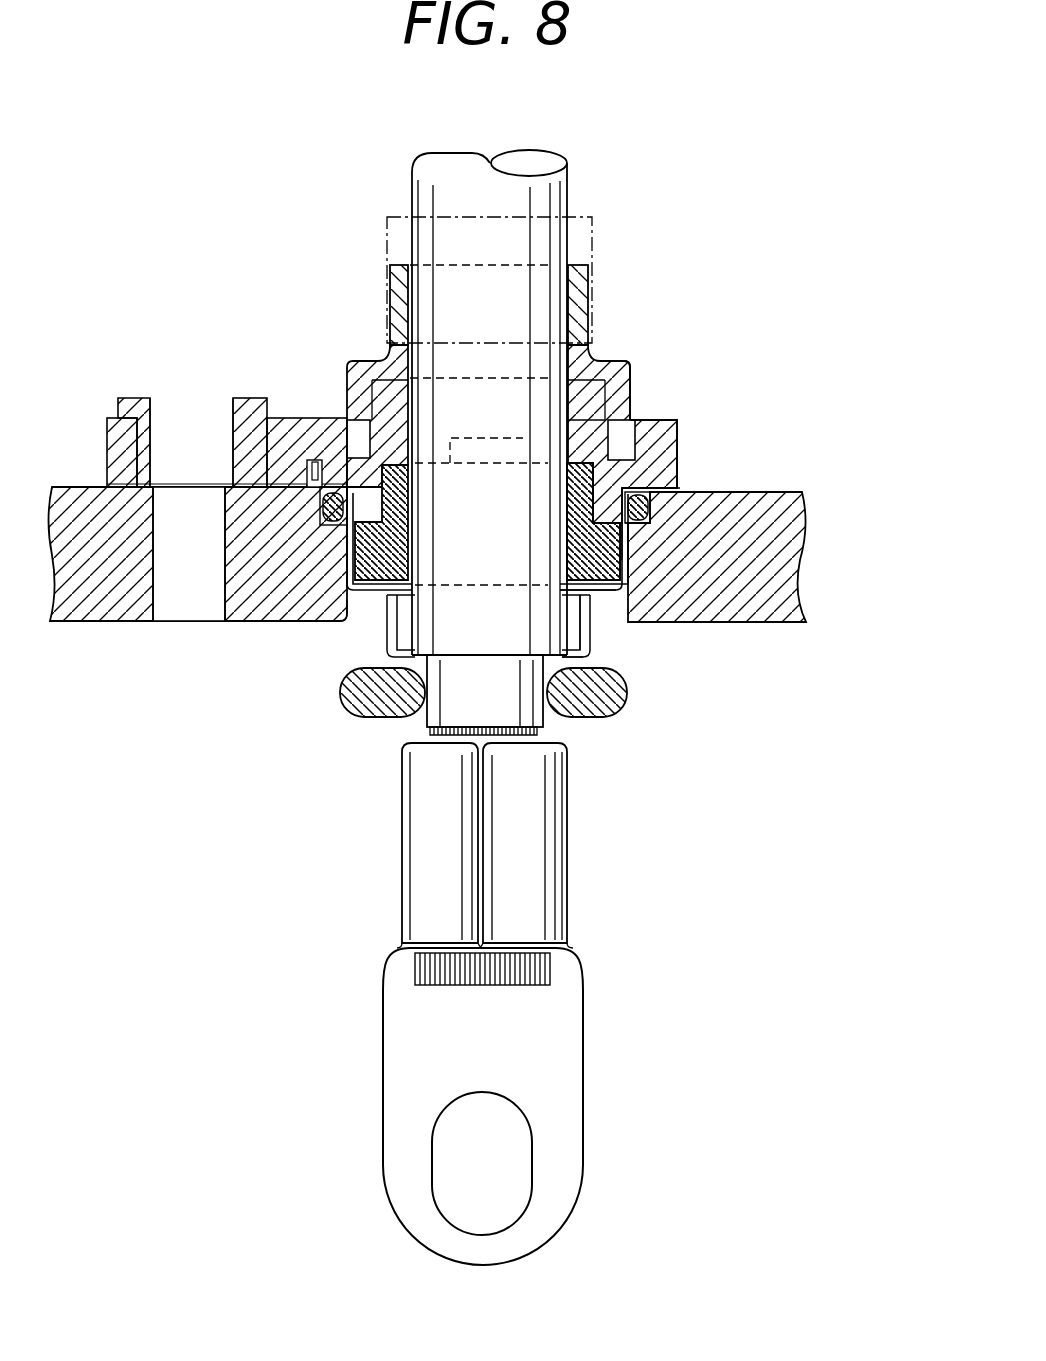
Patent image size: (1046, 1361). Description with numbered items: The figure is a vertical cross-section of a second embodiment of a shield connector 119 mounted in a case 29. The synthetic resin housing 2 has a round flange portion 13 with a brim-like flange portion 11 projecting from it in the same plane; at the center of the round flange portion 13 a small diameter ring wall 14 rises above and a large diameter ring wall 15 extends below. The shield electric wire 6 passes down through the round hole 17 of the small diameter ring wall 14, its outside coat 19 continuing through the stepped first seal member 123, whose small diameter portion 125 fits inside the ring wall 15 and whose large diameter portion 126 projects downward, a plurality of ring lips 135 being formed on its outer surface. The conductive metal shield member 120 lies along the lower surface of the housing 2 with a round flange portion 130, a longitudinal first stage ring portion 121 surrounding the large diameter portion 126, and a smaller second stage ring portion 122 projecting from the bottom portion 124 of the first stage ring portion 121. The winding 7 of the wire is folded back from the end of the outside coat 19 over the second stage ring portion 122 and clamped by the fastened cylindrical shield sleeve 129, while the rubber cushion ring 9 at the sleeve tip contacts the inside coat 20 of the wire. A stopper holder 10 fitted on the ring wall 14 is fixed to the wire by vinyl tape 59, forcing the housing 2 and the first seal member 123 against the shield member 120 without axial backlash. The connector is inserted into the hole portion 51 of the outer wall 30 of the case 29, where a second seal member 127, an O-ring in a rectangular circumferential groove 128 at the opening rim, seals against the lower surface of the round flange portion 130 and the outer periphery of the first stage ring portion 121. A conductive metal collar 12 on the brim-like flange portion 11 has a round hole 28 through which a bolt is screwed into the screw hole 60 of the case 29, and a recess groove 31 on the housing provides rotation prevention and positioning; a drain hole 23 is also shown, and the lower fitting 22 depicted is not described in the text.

The shield electric wire 6 is at (578, 170).
The vinyl tape 59 is at (592, 225).
The outside coat 19 is at (553, 255).
The stopper holder 10 is at (593, 360).
The small diameter ring wall 14 is at (600, 360).
The round hole 17 is at (566, 422).
The round flange portion 13 is at (680, 433).
The shield connector 119 is at (668, 362).
The housing 2 is at (673, 417).
The screw hole 60 is at (183, 593).
The hole portion 51 is at (357, 607).
The collar 12 is at (250, 398).
The round hole 28 is at (185, 418).
The brim-like flange portion 11 is at (108, 445).
The recess groove 31 is at (313, 460).
The large diameter ring wall 15 is at (410, 532).
The small diameter portion 125 is at (412, 483).
The large diameter portion 126 is at (410, 570).
The shield member 120 is at (790, 490).
The first seal member 123 is at (683, 490).
The round flange portion 130 is at (648, 493).
The case 29 is at (795, 490).
The second seal member 127 is at (652, 520).
The circumferential groove 128 is at (660, 525).
The first stage ring portion 121 is at (628, 560).
The ring lips 135 is at (640, 605).
The outer wall 30 is at (780, 622).
The bottom portion 124 is at (600, 615).
The second stage ring portion 122 is at (590, 640).
The shield sleeve 129 is at (590, 655).
The winding 7 is at (515, 707).
The cushion ring 9 is at (595, 704).
The inside coat 20 is at (567, 735).
The yoke 22 is at (548, 1065).
The drain hole 23 is at (487, 438).